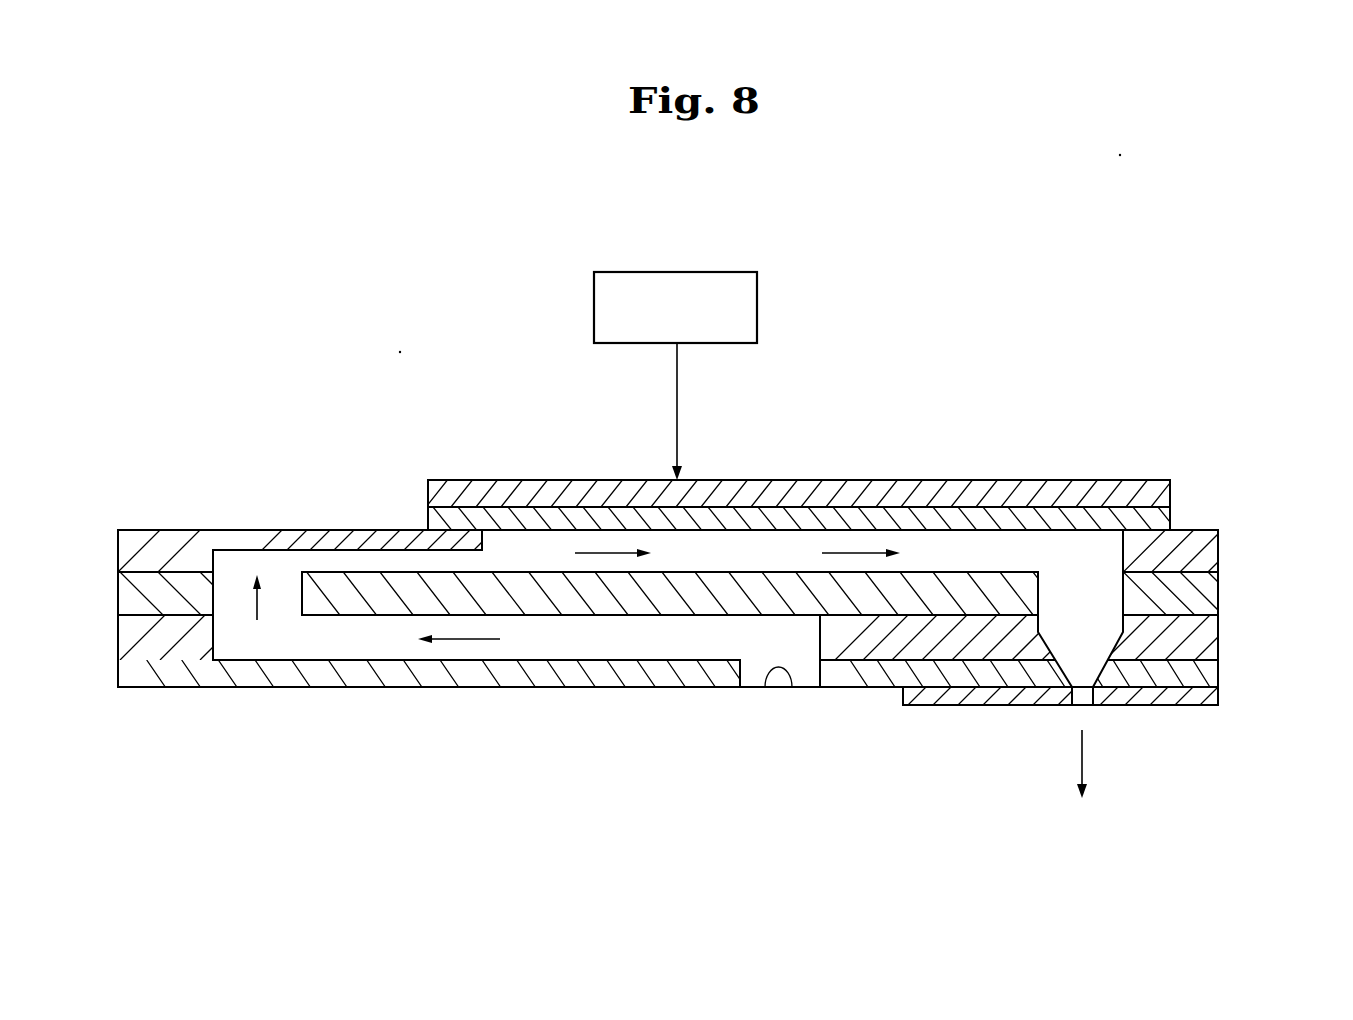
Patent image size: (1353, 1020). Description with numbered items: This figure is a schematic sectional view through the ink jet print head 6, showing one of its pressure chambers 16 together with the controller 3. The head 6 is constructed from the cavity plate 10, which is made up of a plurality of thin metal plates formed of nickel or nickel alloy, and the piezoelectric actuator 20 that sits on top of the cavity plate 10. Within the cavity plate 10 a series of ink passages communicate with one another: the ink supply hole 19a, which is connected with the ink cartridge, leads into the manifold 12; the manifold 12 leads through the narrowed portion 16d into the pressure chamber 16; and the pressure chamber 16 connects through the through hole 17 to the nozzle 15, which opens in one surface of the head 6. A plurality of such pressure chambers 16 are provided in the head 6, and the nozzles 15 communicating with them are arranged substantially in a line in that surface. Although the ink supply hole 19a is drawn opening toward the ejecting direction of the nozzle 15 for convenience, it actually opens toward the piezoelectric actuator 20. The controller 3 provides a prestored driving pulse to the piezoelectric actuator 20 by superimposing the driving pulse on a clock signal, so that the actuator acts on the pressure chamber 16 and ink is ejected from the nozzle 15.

The controller 3 is at (757, 300).
The head 6 is at (1238, 453).
The cavity plate 10 is at (88, 530).
The manifold 12 is at (298, 632).
The nozzle 15 is at (1083, 697).
The pressure chamber 16 is at (927, 553).
The narrowed portion 16d is at (443, 563).
The through hole 17 is at (1080, 607).
The ink supply hole 19a is at (790, 690).
The piezoelectric actuator 20 is at (873, 480).